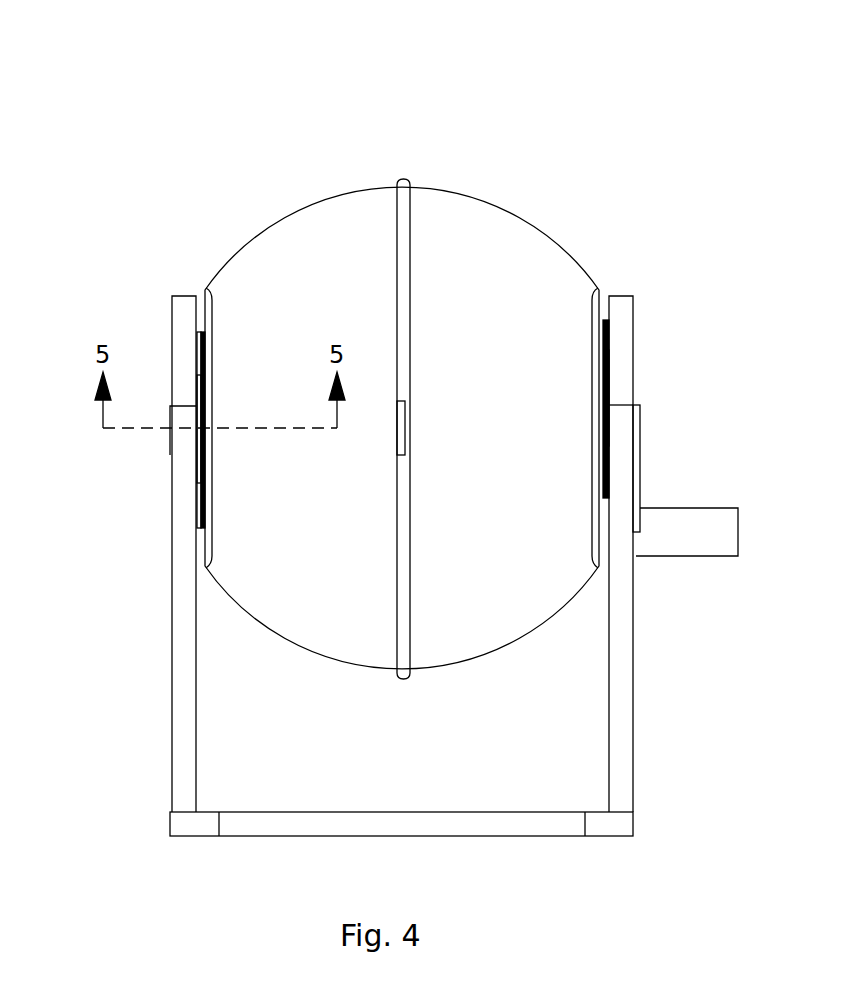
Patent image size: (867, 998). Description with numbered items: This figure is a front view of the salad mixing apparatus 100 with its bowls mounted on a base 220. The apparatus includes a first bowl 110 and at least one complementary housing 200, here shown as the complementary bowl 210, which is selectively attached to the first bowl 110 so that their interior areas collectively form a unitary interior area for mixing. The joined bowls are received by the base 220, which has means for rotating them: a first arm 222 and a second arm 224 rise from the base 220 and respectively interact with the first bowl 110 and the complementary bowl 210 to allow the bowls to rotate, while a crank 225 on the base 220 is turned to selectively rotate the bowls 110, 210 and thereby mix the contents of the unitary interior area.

The salad mixing apparatus 100 is at (657, 112).
The first bowl 110 is at (280, 181).
The complementary bowl 210 is at (504, 174).
The complementary housing 200 is at (607, 240).
The base 220 is at (680, 798).
The first arm 222 is at (183, 653).
The second arm 224 is at (622, 648).
The crank 225 is at (692, 527).